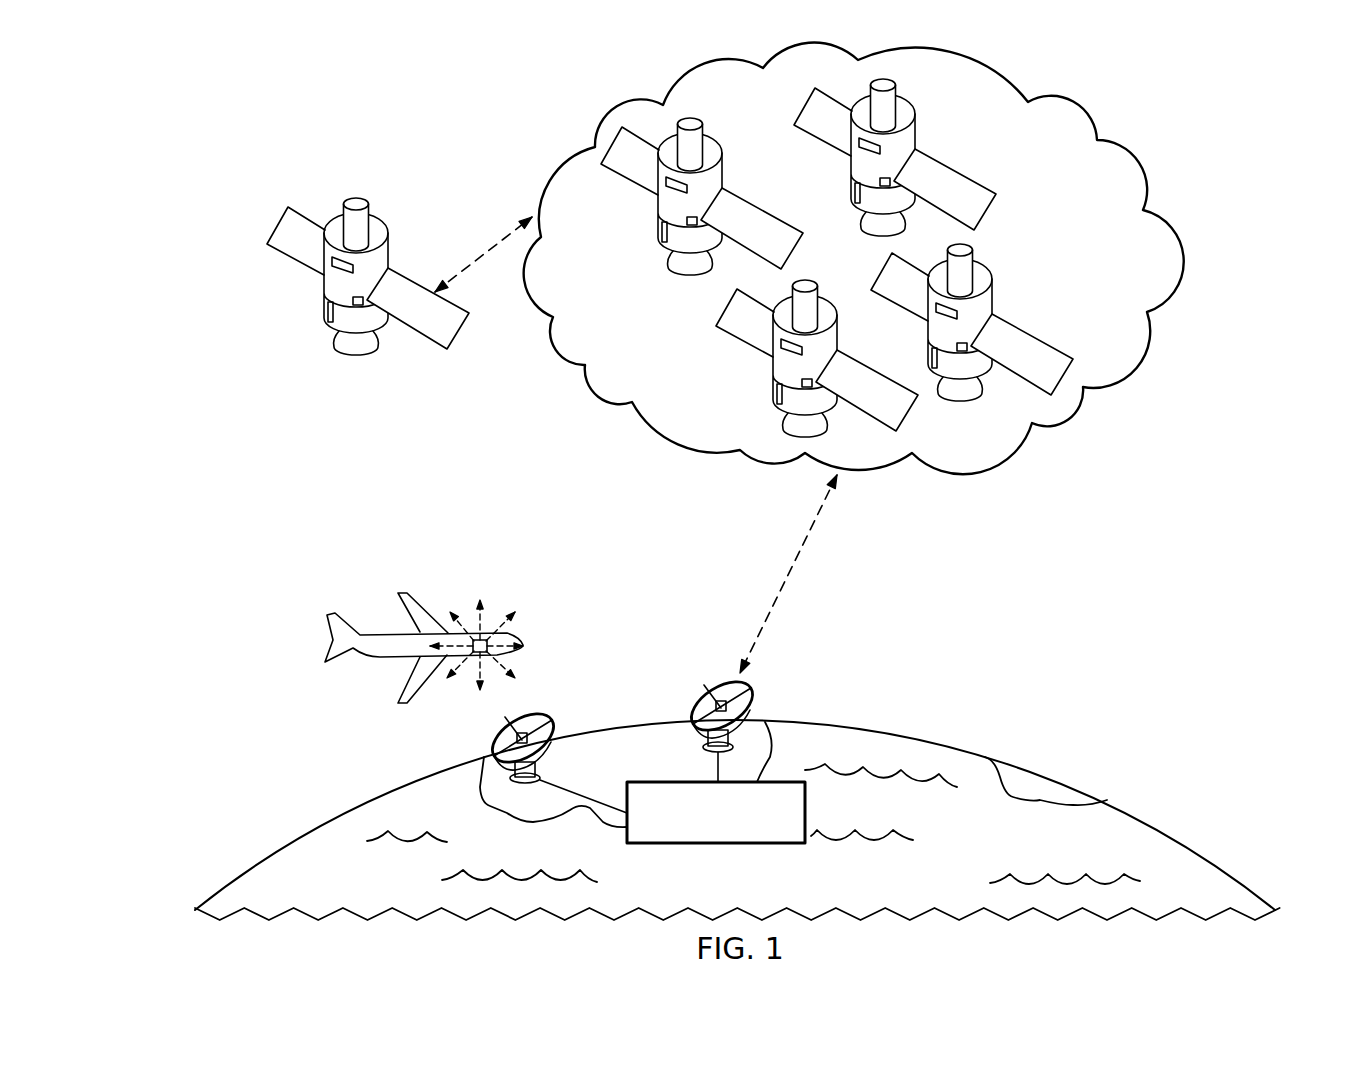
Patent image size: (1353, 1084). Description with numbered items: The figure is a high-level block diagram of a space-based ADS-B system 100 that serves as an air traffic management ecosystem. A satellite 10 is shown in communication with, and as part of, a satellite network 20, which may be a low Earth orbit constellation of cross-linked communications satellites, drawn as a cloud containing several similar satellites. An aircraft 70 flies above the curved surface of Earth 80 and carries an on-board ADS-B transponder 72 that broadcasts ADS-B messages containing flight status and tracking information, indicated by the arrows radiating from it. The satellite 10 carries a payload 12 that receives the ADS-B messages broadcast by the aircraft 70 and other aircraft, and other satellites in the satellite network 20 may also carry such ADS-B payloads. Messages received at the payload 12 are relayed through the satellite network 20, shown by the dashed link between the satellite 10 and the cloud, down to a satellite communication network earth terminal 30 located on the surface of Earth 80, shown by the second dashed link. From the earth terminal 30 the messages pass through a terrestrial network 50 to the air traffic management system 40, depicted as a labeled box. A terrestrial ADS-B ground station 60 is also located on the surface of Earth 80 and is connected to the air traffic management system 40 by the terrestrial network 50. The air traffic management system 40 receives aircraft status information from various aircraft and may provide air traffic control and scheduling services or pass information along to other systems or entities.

The space-based ADS-B system 100 is at (183, 160).
The satellite 10 is at (278, 225).
The payload 12 is at (340, 252).
The satellite network 20 is at (1118, 137).
The satellite communication network earth terminal 30 is at (752, 703).
The air traffic management system 40 is at (718, 845).
The terrestrial network 50 is at (715, 772).
The terrestrial ADS-B ground station 60 is at (553, 745).
The aircraft 70 is at (377, 633).
The ADS-B transponder 72 is at (487, 637).
The Earth 80 is at (963, 750).